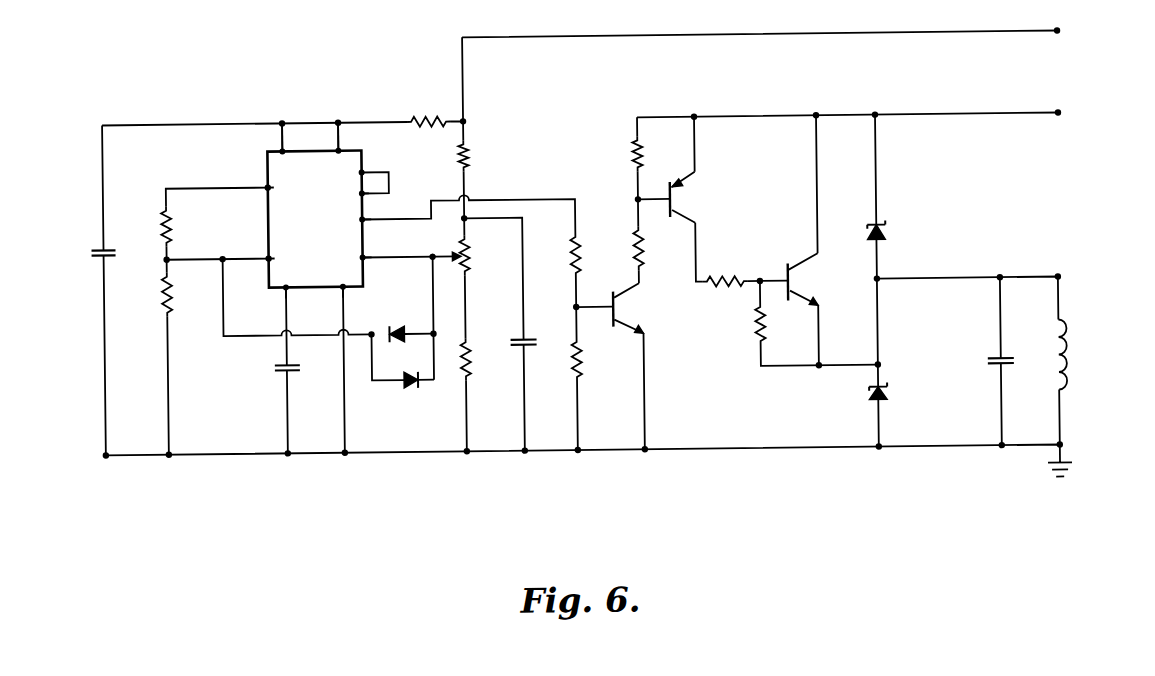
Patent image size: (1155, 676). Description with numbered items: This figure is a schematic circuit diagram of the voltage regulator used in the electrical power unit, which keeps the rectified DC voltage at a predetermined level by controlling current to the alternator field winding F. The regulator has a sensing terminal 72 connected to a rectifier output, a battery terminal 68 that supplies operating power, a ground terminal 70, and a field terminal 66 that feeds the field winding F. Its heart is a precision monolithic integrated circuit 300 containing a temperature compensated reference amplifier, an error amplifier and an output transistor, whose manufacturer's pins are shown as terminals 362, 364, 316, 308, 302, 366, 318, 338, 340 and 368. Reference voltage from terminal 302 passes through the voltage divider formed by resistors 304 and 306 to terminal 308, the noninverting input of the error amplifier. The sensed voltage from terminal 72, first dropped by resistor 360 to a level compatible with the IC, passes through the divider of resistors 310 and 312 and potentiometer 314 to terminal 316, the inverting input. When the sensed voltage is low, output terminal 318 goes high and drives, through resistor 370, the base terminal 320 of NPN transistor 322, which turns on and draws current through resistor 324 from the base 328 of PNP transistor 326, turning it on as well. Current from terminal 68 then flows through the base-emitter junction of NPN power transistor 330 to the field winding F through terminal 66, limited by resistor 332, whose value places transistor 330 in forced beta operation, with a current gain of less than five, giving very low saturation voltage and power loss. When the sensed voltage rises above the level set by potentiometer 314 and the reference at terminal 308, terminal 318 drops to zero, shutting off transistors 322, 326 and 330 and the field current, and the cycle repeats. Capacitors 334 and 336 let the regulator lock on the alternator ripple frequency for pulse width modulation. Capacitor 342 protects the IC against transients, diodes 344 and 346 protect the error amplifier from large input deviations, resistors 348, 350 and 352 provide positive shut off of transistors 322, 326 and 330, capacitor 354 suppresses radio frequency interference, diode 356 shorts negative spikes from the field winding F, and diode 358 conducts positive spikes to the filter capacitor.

The sensing terminal 72 is at (1063, 36).
The battery terminal 68 is at (1063, 118).
The field terminal 66 is at (1061, 282).
The ground terminal 70 is at (1061, 450).
The field winding F is at (1067, 357).
The integrated circuit voltage regulator 300 is at (268, 166).
The IC terminal 302 is at (271, 186).
The resistor 304 is at (162, 230).
The resistor 306 is at (162, 312).
The IC terminal 308 is at (271, 256).
The resistor 310 is at (470, 157).
The resistor 312 is at (470, 361).
The potentiometer 314 is at (470, 256).
The IC terminal 316 is at (366, 257).
The IC terminal 318 is at (366, 219).
The base terminal 320 is at (608, 297).
The NPN transistor 322 is at (640, 310).
The resistor 324 is at (644, 252).
The PNP transistor 326 is at (698, 201).
The base 328 is at (668, 181).
The NPN power transistor 330 is at (801, 256).
The resistor 332 is at (726, 278).
The capacitor 334 is at (277, 369).
The capacitor 336 is at (521, 337).
The IC terminal 338 is at (287, 146).
The IC terminal 340 is at (343, 146).
The capacitor 342 is at (96, 252).
The diode 344 is at (397, 322).
The diode 346 is at (408, 386).
The resistor 348 is at (581, 363).
The resistor 350 is at (634, 152).
The resistor 352 is at (755, 332).
The capacitor 354 is at (990, 370).
The diode 356 is at (884, 394).
The diode 358 is at (884, 232).
The resistor 360 is at (410, 118).
The IC terminal 362 is at (367, 172).
The IC terminal 364 is at (366, 193).
The IC terminal 366 is at (345, 286).
The IC terminal 368 is at (288, 286).
The resistor 370 is at (581, 258).